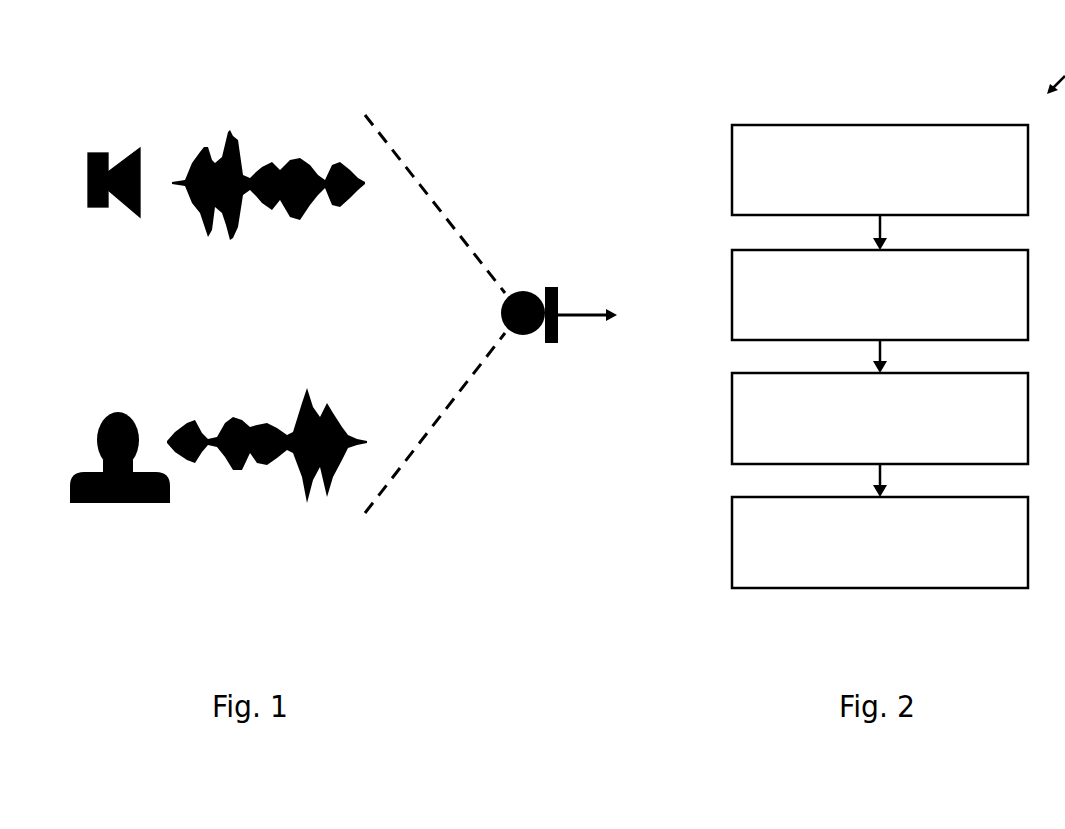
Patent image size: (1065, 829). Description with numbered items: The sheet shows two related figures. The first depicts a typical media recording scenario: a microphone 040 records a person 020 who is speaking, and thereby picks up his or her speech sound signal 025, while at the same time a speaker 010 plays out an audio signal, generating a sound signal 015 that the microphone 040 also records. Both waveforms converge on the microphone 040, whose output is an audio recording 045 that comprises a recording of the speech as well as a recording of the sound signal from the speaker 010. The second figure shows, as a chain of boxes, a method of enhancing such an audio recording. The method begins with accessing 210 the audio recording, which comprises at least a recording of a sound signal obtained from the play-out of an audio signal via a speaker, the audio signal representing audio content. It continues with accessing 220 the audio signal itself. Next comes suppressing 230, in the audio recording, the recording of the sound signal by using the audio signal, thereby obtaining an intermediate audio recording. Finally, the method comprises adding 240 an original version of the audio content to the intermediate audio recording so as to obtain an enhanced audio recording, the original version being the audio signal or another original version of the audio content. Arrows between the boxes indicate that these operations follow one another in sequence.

In FIG. 1, the speaker 010 is at (100, 207).
In FIG. 1, the sound signal 015 is at (292, 213).
In FIG. 1, the person 020 is at (120, 503).
In FIG. 1, the speech sound signal 025 is at (245, 470).
In FIG. 1, the microphone 040 is at (525, 337).
In FIG. 1, the audio recording 045 is at (587, 313).
In FIG. 2, the accessing the audio recording 210 is at (880, 170).
In FIG. 2, the accessing the audio signal 220 is at (880, 295).
In FIG. 2, the suppressing recording of sound signal 230 is at (880, 418).
In FIG. 2, the adding original version of audio content 240 is at (880, 542).